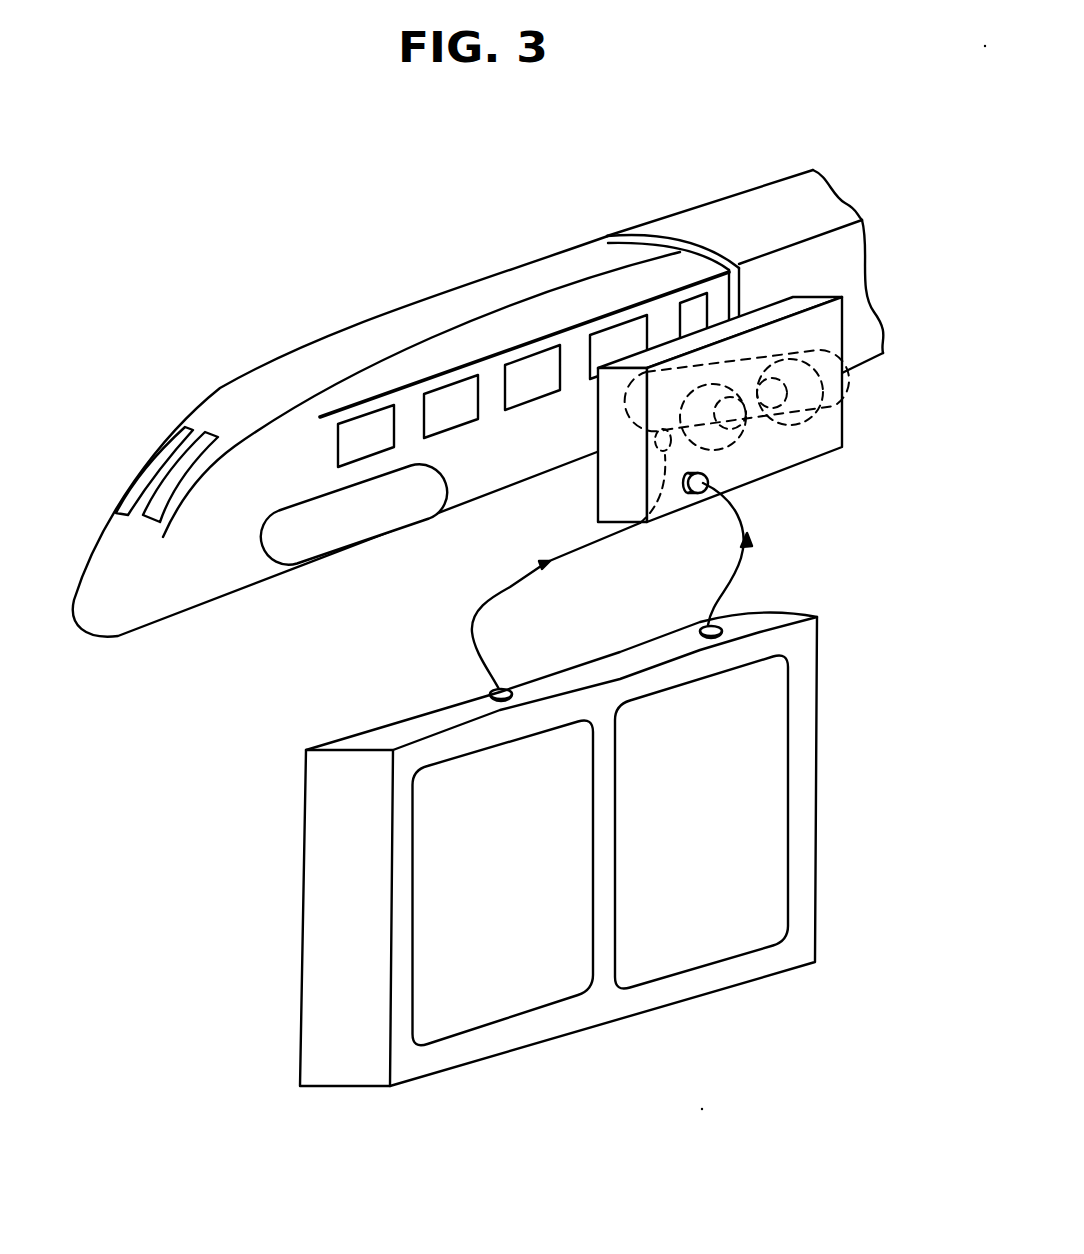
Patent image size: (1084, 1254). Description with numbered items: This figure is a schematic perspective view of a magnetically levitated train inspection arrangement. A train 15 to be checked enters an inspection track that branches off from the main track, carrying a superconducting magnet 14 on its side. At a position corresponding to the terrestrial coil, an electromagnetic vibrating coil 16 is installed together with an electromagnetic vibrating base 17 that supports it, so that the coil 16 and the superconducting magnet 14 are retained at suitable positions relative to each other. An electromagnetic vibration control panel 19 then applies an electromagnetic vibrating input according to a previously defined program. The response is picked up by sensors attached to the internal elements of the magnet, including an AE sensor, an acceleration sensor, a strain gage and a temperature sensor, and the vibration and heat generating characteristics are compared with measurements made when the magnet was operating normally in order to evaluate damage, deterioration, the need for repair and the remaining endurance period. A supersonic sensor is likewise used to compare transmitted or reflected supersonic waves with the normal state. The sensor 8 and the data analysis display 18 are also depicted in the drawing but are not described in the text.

The sensor 8 is at (652, 452).
The superconducting magnet 14 is at (373, 518).
The train 15 is at (409, 332).
The electromagnetic vibrating coil 16 is at (822, 407).
The electromagnetic vibrating base 17 is at (798, 446).
The data analysis display 18 is at (493, 1030).
The electromagnetic vibration control panel 19 is at (705, 967).